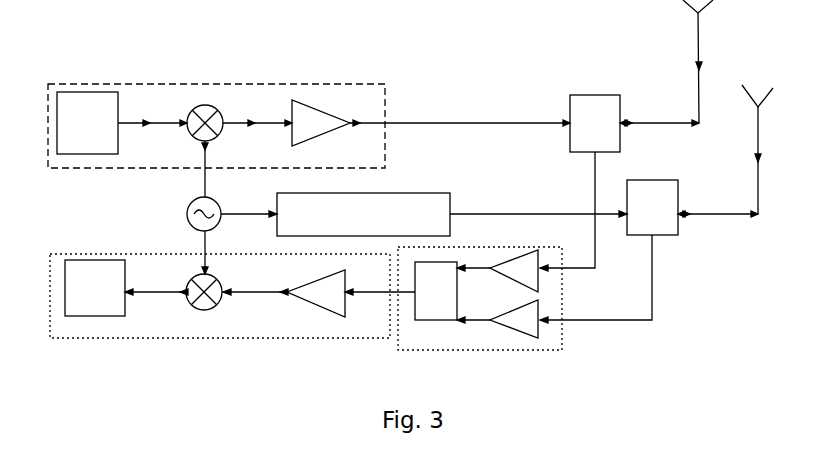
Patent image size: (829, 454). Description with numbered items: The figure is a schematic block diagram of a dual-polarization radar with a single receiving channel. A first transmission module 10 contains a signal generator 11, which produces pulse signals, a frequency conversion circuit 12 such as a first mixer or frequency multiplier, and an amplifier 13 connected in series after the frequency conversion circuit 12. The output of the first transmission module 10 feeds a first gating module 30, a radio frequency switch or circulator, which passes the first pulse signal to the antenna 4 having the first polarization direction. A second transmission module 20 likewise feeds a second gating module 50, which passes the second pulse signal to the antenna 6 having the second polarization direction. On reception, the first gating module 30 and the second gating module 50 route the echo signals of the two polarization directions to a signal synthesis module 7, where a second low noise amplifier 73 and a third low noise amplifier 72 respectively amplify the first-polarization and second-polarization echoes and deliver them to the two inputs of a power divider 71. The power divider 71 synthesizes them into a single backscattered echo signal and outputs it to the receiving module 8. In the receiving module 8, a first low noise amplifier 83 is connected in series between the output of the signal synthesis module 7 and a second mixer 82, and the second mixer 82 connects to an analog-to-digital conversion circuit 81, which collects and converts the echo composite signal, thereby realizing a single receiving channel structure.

The antenna having a first polarization direction 4 is at (681, 61).
The antenna having a second polarization direction 6 is at (749, 142).
The signal synthesis module 7 is at (480, 312).
The receiving module 8 is at (220, 309).
The first transmission module 10 is at (216, 102).
The signal generator 11 is at (105, 99).
The frequency conversion circuit 12 is at (234, 98).
The amplifier 13 is at (339, 103).
The second transmission module 20 is at (373, 190).
The first gating module 30 is at (619, 98).
The second gating module 50 is at (678, 183).
The power divider 71 is at (449, 304).
The third low noise amplifier 72 is at (551, 325).
The second low noise amplifier 73 is at (551, 274).
The analog-to-digital conversion circuit 81 is at (102, 299).
The second mixer 82 is at (227, 303).
The first low noise amplifier 83 is at (334, 304).